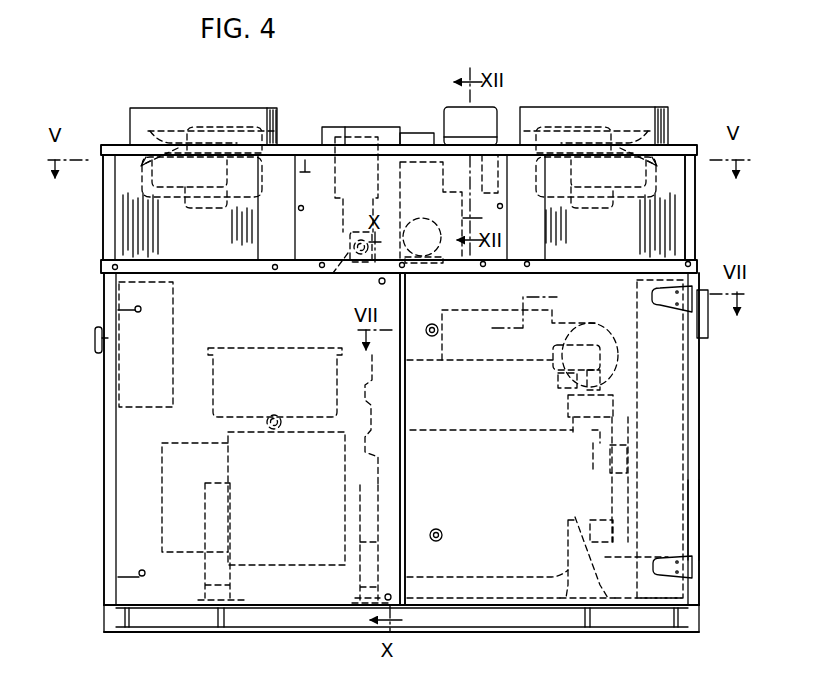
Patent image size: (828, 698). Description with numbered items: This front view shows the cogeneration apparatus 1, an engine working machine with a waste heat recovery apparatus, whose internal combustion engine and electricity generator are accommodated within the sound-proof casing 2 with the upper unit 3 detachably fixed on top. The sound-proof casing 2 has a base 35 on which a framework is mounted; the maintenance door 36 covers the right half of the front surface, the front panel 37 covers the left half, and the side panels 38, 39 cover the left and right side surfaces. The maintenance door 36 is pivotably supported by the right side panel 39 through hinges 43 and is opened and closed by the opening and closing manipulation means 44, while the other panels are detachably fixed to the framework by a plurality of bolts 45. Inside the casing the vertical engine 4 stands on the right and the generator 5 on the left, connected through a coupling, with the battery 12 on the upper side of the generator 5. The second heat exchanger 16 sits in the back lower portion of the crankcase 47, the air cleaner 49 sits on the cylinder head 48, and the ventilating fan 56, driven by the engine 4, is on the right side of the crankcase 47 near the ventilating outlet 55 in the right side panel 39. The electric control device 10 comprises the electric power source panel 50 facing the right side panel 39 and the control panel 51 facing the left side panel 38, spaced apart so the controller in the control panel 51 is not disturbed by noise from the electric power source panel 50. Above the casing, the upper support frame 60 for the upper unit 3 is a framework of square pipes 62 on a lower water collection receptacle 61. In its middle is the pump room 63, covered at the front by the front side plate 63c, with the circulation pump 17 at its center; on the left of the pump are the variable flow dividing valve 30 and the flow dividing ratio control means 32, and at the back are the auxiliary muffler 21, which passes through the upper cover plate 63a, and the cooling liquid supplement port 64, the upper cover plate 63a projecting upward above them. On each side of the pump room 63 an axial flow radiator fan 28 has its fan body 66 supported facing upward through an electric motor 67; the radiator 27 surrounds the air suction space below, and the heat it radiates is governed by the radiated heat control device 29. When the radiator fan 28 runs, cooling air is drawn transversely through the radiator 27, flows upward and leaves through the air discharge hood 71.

The cogeneration apparatus 1 is at (550, 84).
The sound-proof casing 2 is at (98, 497).
The upper unit 3 is at (62, 221).
The vertical engine 4 is at (461, 586).
The generator 5 is at (275, 566).
The electric control device 10 is at (725, 439).
The battery 12 is at (264, 349).
The second heat exchanger 16 is at (604, 560).
The circulation pump 17 is at (411, 160).
The auxiliary muffler 21 is at (452, 107).
The radiator 27 is at (133, 228).
The radiator fan 28 is at (186, 126).
The radiated heat control device 29 is at (327, 282).
The variable flow dividing valve 30 is at (328, 277).
The flow dividing ratio control means 32 is at (345, 136).
The base 35 is at (172, 624).
The maintenance door 36 is at (628, 378).
The front panel 37 is at (127, 423).
The side panel 38 is at (110, 461).
The side panel 39 is at (697, 492).
The hinges 43 is at (663, 306).
The opening and closing manipulation means 44 is at (432, 323).
The bolts 45 is at (118, 310).
The crankcase 47 is at (490, 578).
The cylinder head 48 is at (603, 417).
The air cleaner 49 is at (500, 308).
The electric power source panel 50 is at (688, 391).
The control panel 51 is at (118, 369).
The ventilating outlet 55 is at (708, 322).
The ventilating fan 56 is at (628, 463).
The upper support frame 60 is at (102, 245).
The lower water collection receptacle 61 is at (100, 269).
The square pipes 62 is at (105, 184).
The pump room 63 is at (320, 172).
The upper cover plate 63a is at (375, 126).
The front side plate 63c is at (305, 160).
The cooling liquid supplement port 64 is at (424, 132).
The fan body 66 is at (242, 123).
The electric motor 67 is at (209, 208).
The air discharge hood 71 is at (140, 111).